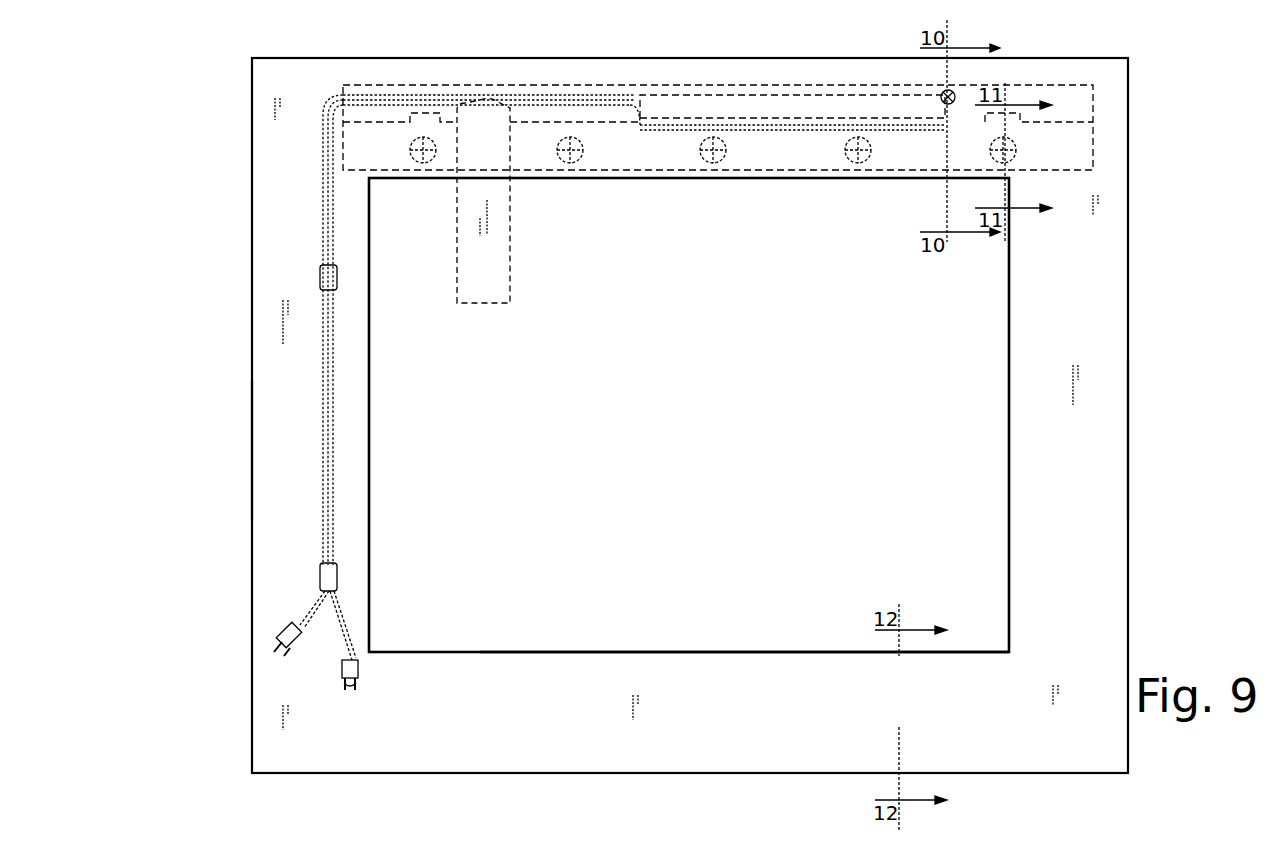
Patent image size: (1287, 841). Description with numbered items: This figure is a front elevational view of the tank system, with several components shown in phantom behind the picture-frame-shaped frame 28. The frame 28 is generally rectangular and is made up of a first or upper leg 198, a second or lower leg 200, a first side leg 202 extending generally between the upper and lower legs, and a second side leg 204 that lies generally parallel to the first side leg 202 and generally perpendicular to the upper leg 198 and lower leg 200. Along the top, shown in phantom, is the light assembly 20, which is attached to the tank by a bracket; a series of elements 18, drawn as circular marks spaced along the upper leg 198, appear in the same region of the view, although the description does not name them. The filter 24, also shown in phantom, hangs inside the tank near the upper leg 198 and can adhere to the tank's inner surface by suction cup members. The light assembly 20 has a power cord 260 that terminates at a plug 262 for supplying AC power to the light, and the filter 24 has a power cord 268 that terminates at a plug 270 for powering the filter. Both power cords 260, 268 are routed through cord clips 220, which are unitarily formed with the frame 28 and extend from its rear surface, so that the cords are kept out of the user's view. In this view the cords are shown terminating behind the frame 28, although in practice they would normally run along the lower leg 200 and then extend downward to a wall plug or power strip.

The upper leg 198 is at (1095, 58).
The first side leg 202 is at (250, 482).
The second side leg 204 is at (1130, 410).
The lower leg 200 is at (550, 651).
The frame 28 is at (714, 620).
The power cord 260 is at (588, 100).
The fasteners / screws 18 is at (577, 163).
The light assembly 20 is at (945, 106).
The filter 24 is at (511, 238).
The power cord 268 is at (334, 197).
The cord clips 220 is at (340, 272).
The plug 262 is at (285, 632).
The plug 270 is at (358, 669).